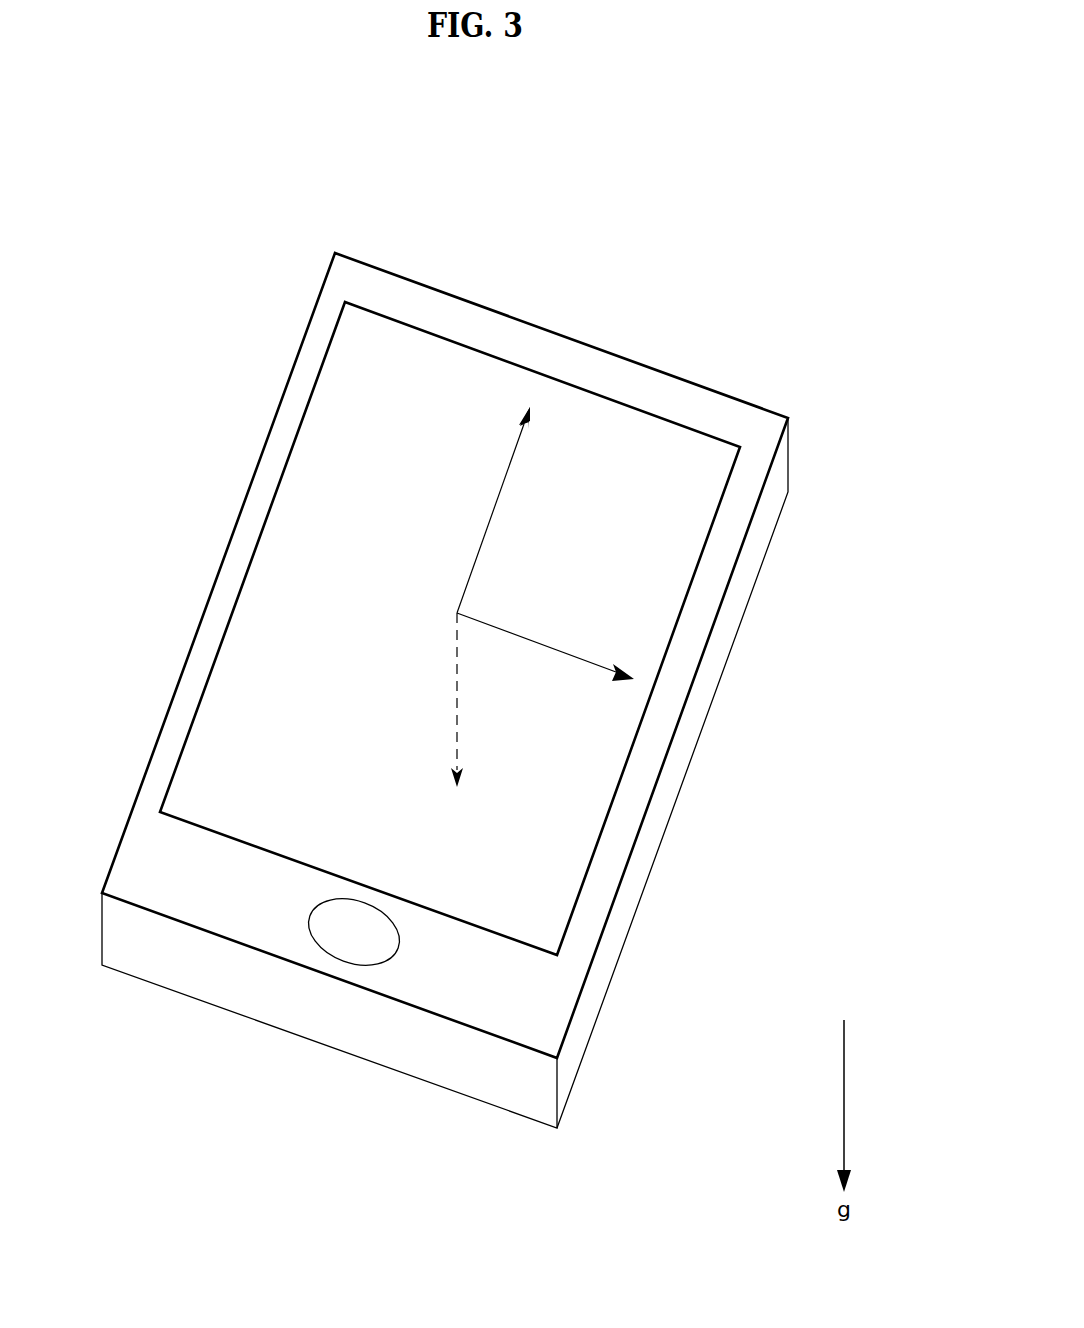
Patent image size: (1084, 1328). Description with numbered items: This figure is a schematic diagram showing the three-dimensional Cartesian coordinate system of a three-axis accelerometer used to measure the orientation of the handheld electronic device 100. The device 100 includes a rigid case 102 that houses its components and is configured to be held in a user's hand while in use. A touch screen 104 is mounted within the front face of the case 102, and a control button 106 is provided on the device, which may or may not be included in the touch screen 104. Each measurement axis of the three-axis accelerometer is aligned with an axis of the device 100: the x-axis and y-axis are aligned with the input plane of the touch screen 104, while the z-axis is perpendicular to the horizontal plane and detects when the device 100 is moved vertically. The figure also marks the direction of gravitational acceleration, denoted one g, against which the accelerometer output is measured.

The handheld electronic device 100 is at (497, 659).
The case 102 is at (280, 403).
The touch screen 104 is at (723, 500).
The control button 106 is at (337, 953).